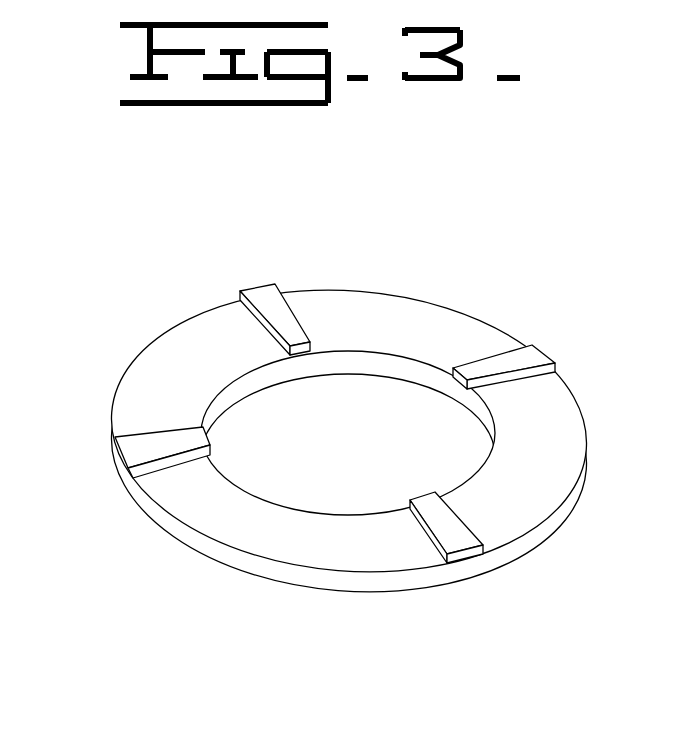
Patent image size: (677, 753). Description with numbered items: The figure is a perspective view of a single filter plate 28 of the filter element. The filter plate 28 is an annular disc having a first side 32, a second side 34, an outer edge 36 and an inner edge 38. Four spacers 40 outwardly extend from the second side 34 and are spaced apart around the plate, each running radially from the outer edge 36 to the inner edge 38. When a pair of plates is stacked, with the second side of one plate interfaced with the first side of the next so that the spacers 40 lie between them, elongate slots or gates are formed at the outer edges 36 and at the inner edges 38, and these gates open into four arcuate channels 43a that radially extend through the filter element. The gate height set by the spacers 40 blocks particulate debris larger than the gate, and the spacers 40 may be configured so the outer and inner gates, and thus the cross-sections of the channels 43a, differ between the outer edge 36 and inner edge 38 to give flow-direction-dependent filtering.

The filter plate 28 is at (356, 428).
The first side 32 is at (208, 562).
The second side 34 is at (533, 424).
The outer edge 36 is at (359, 451).
The inner edge 38 is at (303, 368).
The spacers 40 is at (263, 300).
The arcuate channels 43a is at (172, 352).